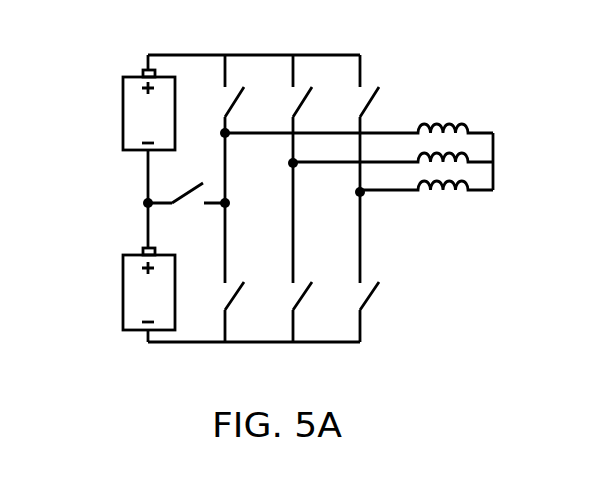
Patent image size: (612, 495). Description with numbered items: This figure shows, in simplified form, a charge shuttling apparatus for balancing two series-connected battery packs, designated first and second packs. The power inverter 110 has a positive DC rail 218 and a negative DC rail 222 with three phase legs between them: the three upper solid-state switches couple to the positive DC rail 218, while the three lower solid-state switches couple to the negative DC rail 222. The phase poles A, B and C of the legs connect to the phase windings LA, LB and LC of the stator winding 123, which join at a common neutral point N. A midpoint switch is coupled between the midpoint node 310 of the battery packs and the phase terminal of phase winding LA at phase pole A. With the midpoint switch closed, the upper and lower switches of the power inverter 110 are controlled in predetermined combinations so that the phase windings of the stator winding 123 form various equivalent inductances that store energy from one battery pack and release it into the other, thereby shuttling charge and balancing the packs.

The power inverter 110 is at (302, 31).
The positive DC rail 218 is at (190, 55).
The negative DC rail 222 is at (189, 342).
The midpoint node 310 is at (137, 203).
The stator winding 123 is at (443, 97).